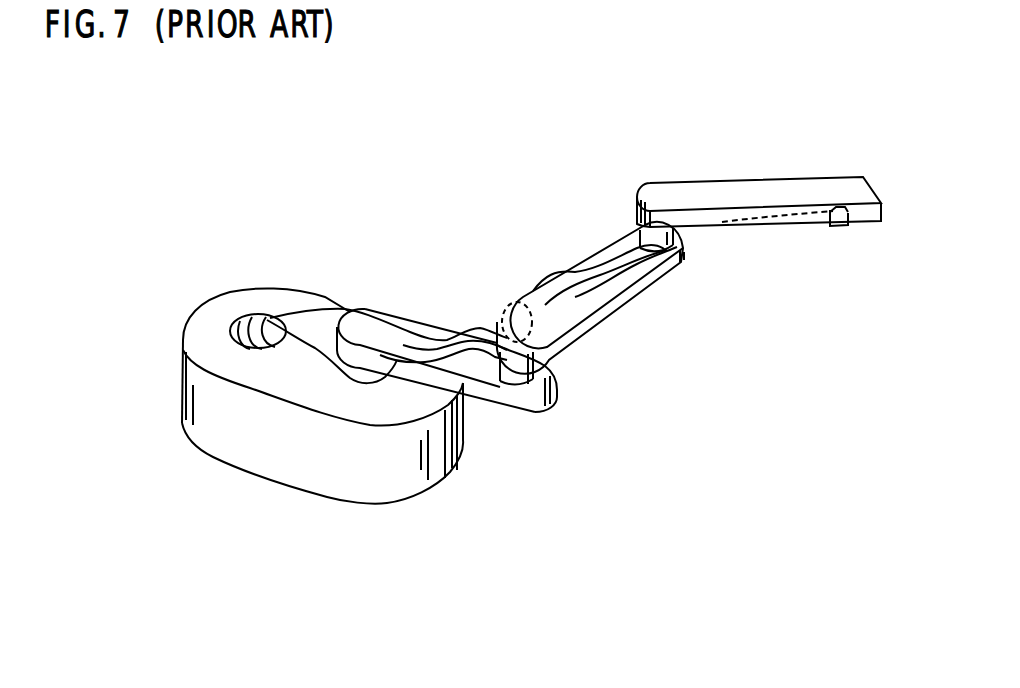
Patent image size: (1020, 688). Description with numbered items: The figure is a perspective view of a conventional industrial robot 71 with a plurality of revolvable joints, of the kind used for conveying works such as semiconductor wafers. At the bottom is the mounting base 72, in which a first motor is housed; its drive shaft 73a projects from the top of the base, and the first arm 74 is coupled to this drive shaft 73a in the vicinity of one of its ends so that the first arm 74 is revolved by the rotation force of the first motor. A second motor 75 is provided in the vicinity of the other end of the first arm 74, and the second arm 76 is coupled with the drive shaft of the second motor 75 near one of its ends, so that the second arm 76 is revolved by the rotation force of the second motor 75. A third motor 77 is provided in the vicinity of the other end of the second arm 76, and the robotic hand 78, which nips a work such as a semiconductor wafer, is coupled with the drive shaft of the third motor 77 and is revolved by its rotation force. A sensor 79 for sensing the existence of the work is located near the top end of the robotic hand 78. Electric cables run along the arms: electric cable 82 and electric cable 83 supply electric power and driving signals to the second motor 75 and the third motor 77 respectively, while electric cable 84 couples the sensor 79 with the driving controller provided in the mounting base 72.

The industrial robot 71 is at (425, 107).
The mounting base 72 is at (243, 455).
The drive shaft of the first motor 73a is at (363, 377).
The first arm 74 is at (490, 400).
The second motor 75 is at (527, 385).
The second arm 76 is at (600, 320).
The third motor 77 is at (663, 240).
The robotic hand 78 is at (748, 227).
The sensor 79 is at (833, 230).
The electric cable 82 is at (377, 327).
The electric cable 83 is at (587, 270).
The electric cable 84 is at (648, 239).